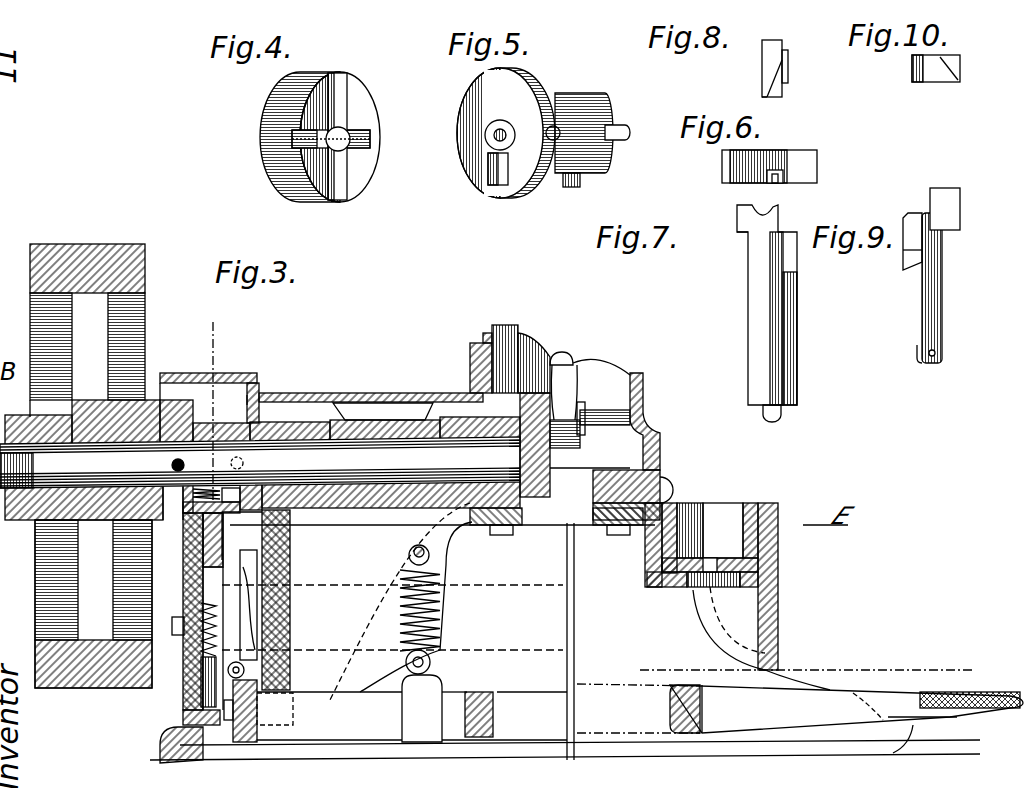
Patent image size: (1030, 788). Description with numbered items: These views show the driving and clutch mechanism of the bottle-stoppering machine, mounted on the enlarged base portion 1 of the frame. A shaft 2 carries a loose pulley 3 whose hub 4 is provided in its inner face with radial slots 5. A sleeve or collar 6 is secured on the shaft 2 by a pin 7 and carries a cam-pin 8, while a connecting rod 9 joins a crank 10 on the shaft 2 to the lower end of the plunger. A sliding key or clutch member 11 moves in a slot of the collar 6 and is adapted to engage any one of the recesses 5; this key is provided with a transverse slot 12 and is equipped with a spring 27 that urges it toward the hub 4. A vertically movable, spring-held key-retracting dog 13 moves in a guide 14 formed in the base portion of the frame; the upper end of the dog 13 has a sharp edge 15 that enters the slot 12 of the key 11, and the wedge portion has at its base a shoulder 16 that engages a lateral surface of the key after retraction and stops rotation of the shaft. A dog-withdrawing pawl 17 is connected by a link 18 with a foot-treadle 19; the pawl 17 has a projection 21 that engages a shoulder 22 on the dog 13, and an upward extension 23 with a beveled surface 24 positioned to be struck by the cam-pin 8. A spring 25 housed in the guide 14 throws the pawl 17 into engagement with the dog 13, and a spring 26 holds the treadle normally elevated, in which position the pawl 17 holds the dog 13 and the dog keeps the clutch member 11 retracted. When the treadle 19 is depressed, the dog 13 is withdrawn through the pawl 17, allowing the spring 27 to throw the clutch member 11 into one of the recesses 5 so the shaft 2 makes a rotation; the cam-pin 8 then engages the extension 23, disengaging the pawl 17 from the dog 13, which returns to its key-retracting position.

In FIG. 3, the base portion 1 is at (425, 396).
In FIG. 3, the shaft 2 is at (375, 455).
In FIG. 3, the loose pulley 3 is at (95, 244).
In FIG. 3, the hub 4 is at (120, 400).
In FIG. 4, the hub 4 is at (272, 127).
In FIG. 4, the radial slots 5 is at (342, 88).
In FIG. 3, the sleeve or collar 6 is at (255, 402).
In FIG. 5, the sleeve or collar 6 is at (573, 107).
In FIG. 3, the pin 7 is at (182, 459).
In FIG. 3, the cam-pin 8 is at (260, 417).
In FIG. 5, the cam-pin 8 is at (617, 127).
In FIG. 3, the connecting rod 9 is at (577, 363).
In FIG. 3, the crank 10 is at (585, 410).
In FIG. 3, the sliding key or clutch member 11 is at (160, 508).
In FIG. 5, the sliding key or clutch member 11 is at (567, 180).
In FIG. 6, the sliding key or clutch member 11 is at (793, 153).
In FIG. 3, the transverse slot 12 is at (361, 553).
In FIG. 6, the transverse slot 12 is at (770, 187).
In FIG. 3, the key-retracting dog 13 is at (200, 597).
In FIG. 8, the key-retracting dog 13 is at (748, 73).
In FIG. 7, the key-retracting dog 13 is at (757, 307).
In FIG. 3, the guide 14 is at (185, 603).
In FIG. 4, the sharp edge 15 is at (343, 180).
In FIG. 8, the sharp edge 15 is at (762, 95).
In FIG. 6, the sharp edge 15 is at (780, 217).
In FIG. 8, the shoulder 16 is at (787, 67).
In FIG. 3, the dog-withdrawing pawl 17 is at (233, 618).
In FIG. 9, the dog-withdrawing pawl 17 is at (947, 300).
In FIG. 3, the link 18 is at (253, 693).
In FIG. 3, the foot-treadle 19 is at (483, 693).
In FIG. 3, the projection 21 is at (273, 560).
In FIG. 9, the projection 21 is at (903, 272).
In FIG. 3, the shoulder 22 is at (185, 572).
In FIG. 7, the shoulder 22 is at (790, 273).
In FIG. 10, the upward extension 23 is at (958, 60).
In FIG. 9, the upward extension 23 is at (960, 200).
In FIG. 10, the beveled surface 24 is at (942, 75).
In FIG. 3, the spring 25 is at (260, 600).
In FIG. 3, the spring 26 is at (438, 612).
In FIG. 3, the spring 27 is at (207, 411).